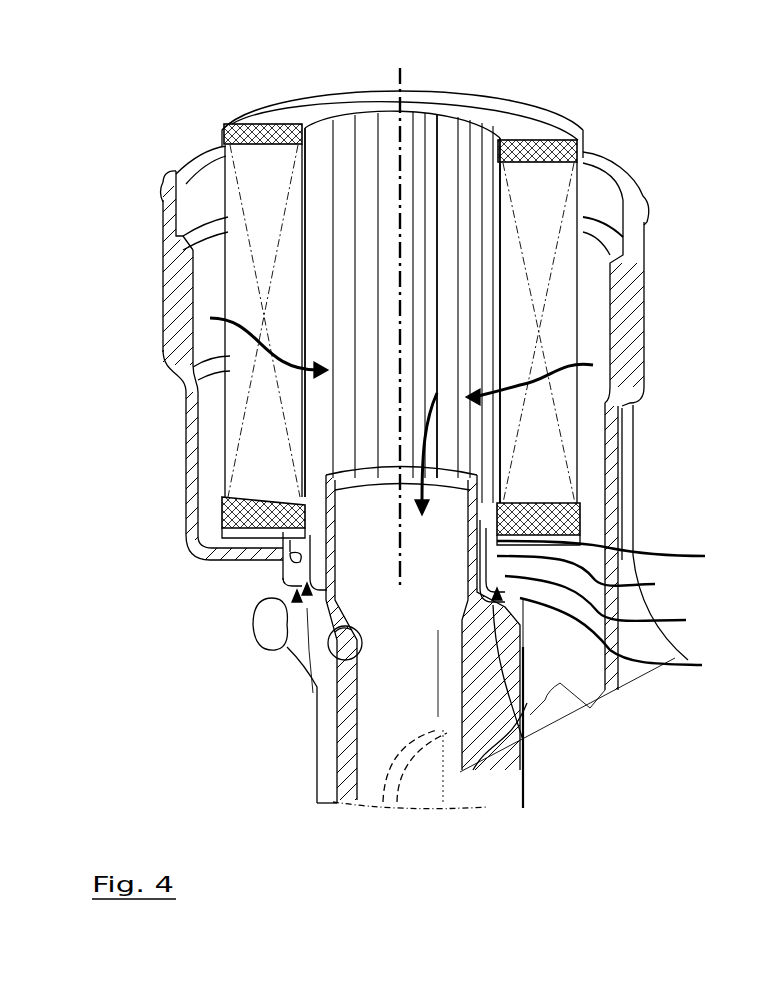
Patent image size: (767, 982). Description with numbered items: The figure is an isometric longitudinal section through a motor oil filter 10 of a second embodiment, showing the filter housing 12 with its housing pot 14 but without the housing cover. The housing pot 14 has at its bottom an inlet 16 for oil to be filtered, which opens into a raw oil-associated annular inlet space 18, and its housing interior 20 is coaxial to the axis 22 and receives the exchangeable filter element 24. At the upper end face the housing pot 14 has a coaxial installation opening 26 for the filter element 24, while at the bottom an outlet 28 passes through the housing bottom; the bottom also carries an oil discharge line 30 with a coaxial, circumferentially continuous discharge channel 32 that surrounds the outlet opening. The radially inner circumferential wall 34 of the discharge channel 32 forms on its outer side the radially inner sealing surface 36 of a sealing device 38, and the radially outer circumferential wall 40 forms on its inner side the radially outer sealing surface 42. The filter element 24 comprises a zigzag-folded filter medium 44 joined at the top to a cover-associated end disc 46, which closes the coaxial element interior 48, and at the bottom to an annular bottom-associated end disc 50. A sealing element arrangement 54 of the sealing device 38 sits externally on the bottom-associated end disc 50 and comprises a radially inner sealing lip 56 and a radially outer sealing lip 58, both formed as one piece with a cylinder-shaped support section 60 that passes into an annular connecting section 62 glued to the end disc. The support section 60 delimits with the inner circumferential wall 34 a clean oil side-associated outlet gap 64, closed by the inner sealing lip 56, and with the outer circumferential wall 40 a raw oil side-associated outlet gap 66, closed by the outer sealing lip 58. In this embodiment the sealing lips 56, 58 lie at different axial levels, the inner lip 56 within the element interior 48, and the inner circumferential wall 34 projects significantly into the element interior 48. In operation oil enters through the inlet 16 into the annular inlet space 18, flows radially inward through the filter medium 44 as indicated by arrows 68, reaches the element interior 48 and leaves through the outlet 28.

The oil filter 10 is at (166, 86).
The filter housing 12 is at (158, 260).
The housing pot 14 is at (198, 372).
The inlet 16 is at (557, 703).
The annular inlet space 18 is at (208, 423).
The housing interior 20 is at (588, 300).
The axis 22 is at (400, 68).
The filter element 24 is at (558, 110).
The installation opening 26 is at (197, 193).
The outlet 28 is at (403, 773).
The oil discharge line 30 is at (265, 652).
The discharge channel 32 is at (288, 592).
The radially inner circumferential wall 34 is at (328, 573).
The radially inner sealing surface 36 is at (340, 520).
The sealing device 38 is at (523, 808).
The radially outer circumferential wall 40 is at (283, 553).
The radially outer sealing surface 42 is at (283, 548).
The filter medium 44 is at (517, 213).
The cover-associated end disc 46 is at (263, 122).
The element interior 48 is at (335, 193).
The bottom-associated end disc 50 is at (575, 537).
The sealing element arrangement 54 is at (337, 797).
The radially inner sealing lip 56 is at (490, 525).
The radially outer sealing lip 58 is at (700, 665).
The support section 60 is at (680, 620).
The connecting section 62 is at (705, 556).
The clean oil side-associated outlet gap 64 is at (318, 500).
The raw oil side-associated outlet gap 66 is at (650, 583).
The arrows 68 is at (628, 403).